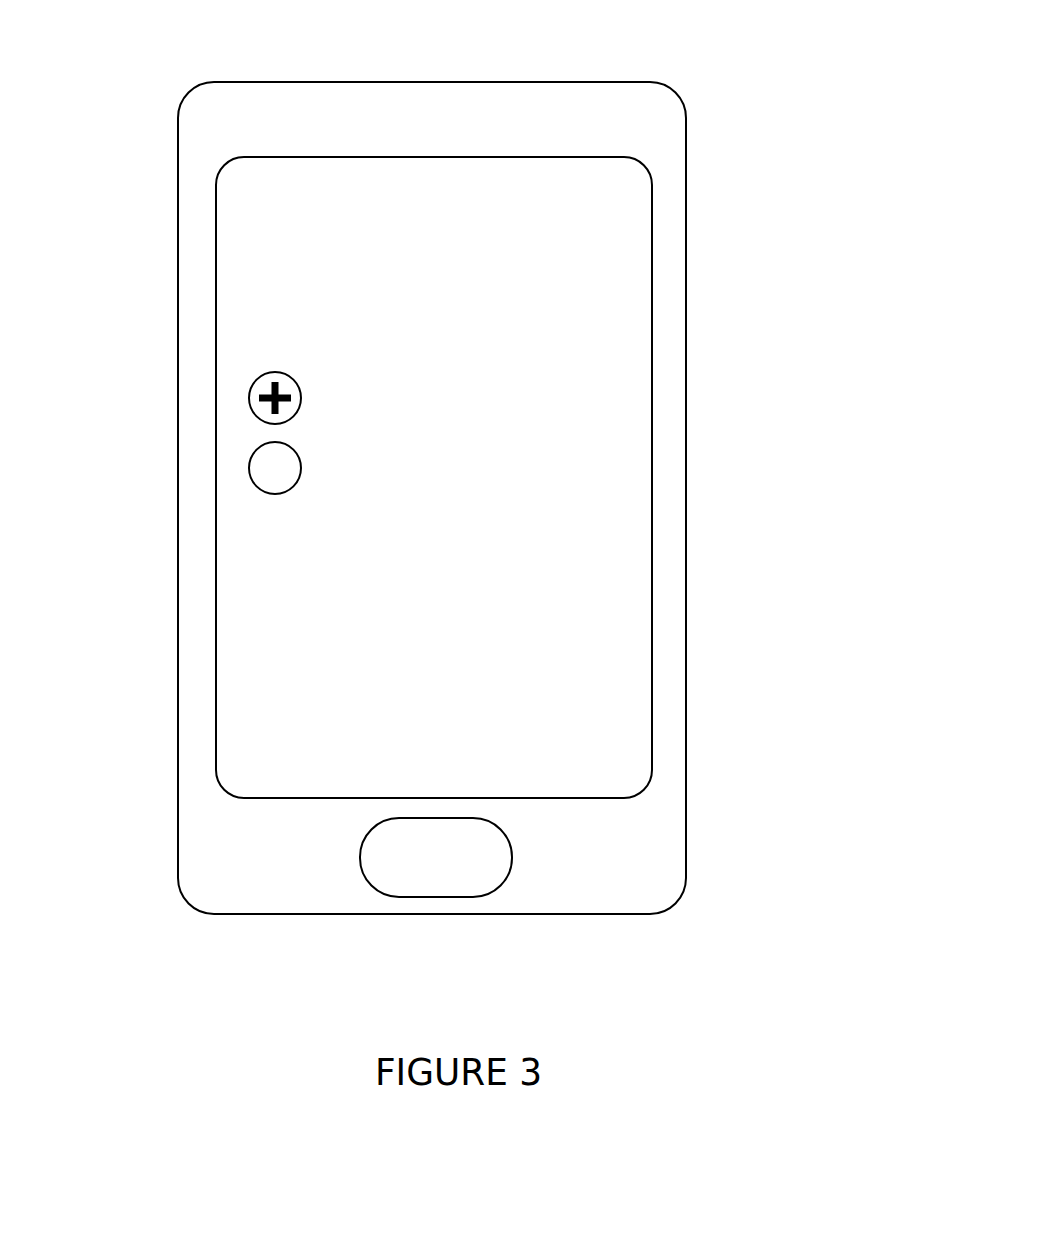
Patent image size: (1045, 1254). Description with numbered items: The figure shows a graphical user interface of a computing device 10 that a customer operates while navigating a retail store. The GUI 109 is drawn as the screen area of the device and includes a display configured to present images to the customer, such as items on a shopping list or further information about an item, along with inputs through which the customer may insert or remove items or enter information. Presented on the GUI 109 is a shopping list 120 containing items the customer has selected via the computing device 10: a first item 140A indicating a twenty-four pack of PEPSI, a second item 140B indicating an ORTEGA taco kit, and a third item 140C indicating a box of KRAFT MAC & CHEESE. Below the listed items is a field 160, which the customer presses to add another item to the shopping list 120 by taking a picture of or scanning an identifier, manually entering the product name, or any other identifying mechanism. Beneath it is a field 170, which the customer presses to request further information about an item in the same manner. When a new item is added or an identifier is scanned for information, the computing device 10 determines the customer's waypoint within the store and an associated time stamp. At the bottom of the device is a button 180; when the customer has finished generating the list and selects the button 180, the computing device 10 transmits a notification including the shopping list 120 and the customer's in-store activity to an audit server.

The computing device 10 is at (687, 372).
The GUI 109 is at (652, 617).
The shopping list 120 is at (512, 232).
The first item 140A is at (231, 221).
The second item 140B is at (232, 277).
The third item 140C is at (232, 332).
The field 160 is at (249, 406).
The field 170 is at (249, 483).
The button 180 is at (372, 869).